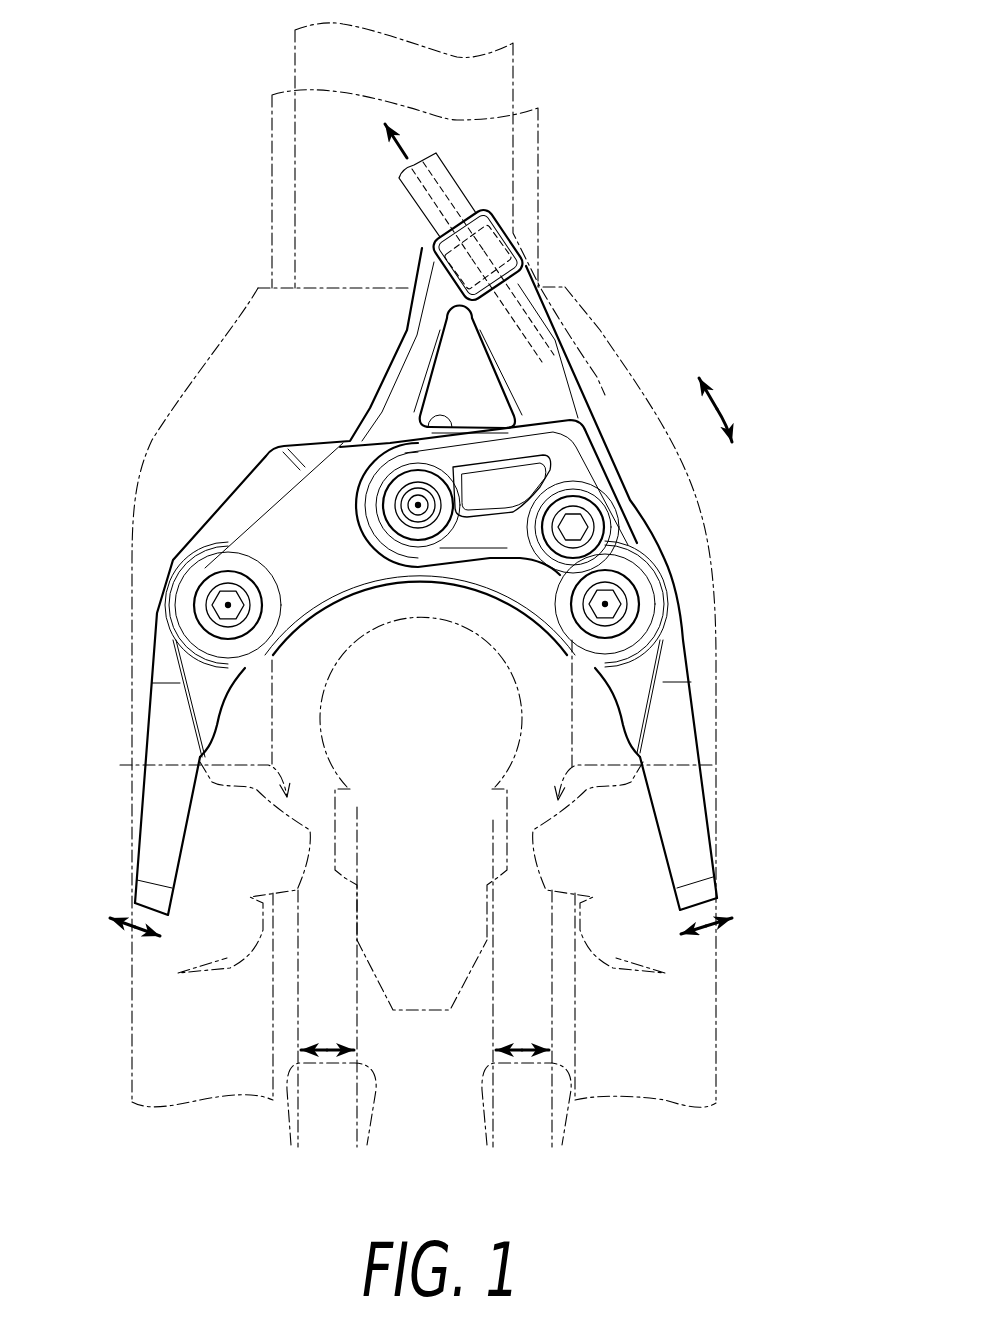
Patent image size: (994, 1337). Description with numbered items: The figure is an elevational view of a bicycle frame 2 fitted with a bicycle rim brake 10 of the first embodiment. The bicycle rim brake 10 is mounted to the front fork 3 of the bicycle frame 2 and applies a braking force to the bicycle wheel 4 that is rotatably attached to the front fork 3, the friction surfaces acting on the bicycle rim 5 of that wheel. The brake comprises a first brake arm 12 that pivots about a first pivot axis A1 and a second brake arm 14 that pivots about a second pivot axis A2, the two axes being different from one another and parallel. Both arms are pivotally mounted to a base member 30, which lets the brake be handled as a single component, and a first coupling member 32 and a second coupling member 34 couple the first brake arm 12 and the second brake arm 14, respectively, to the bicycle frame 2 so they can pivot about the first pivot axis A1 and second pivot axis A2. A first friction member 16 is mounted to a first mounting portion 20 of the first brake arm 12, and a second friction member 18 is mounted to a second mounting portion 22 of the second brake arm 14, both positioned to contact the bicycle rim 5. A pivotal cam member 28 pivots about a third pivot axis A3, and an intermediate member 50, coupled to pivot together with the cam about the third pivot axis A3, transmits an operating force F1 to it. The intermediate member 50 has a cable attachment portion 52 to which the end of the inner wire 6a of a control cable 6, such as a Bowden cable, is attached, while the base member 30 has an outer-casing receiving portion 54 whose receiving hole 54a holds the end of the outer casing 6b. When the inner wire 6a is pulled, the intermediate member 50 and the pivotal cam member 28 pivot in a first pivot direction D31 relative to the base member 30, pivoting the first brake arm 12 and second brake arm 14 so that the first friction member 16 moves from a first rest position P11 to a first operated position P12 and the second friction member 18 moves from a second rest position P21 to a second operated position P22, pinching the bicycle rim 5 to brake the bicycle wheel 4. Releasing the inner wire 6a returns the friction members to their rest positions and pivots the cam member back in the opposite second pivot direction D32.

The bicycle frame 2 is at (227, 94).
The front fork 3 is at (237, 317).
The bicycle wheel 4 is at (421, 1018).
The bicycle rim 5 is at (460, 1004).
The control cable 6 is at (503, 150).
The inner wire 6a is at (580, 336).
The outer casing 6b is at (459, 164).
The bicycle rim brake 10 is at (621, 410).
The first brake arm 12 is at (146, 658).
The second brake arm 14 is at (699, 652).
The first friction member 16 is at (120, 765).
The second friction member 18 is at (726, 765).
The first mounting portion 20 is at (148, 851).
The second mounting portion 22 is at (702, 852).
The pivotal cam member 28 is at (447, 403).
The base member 30 is at (373, 413).
The first coupling member 32 is at (197, 575).
The second coupling member 34 is at (633, 570).
The intermediate member 50 is at (378, 450).
The cable attachment portion 52 is at (624, 543).
The outer-casing receiving portion 54 is at (508, 242).
The receiving hole 54a is at (492, 216).
The first pivot axis A1 is at (225, 605).
The second pivot axis A2 is at (608, 604).
The third pivot axis A3 is at (415, 505).
The first pivot direction D31 is at (720, 388).
The second pivot direction D32 is at (729, 424).
The operating force F1 is at (395, 142).
The first rest position P11 is at (326, 1033).
The first operated position P12 is at (357, 992).
The second rest position P21 is at (527, 1033).
The second operated position P22 is at (490, 998).